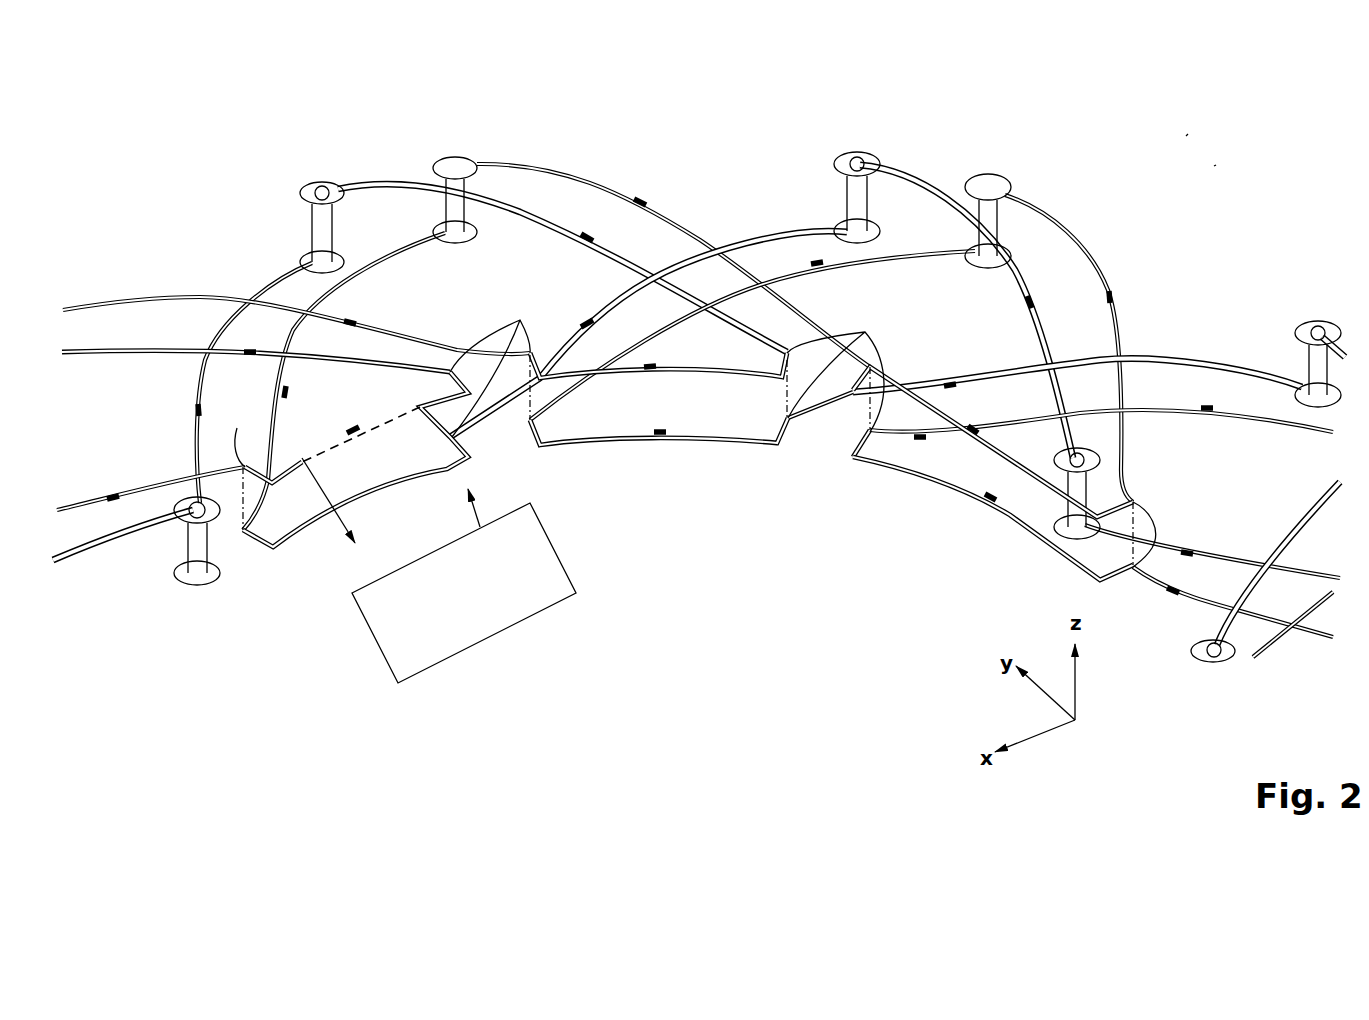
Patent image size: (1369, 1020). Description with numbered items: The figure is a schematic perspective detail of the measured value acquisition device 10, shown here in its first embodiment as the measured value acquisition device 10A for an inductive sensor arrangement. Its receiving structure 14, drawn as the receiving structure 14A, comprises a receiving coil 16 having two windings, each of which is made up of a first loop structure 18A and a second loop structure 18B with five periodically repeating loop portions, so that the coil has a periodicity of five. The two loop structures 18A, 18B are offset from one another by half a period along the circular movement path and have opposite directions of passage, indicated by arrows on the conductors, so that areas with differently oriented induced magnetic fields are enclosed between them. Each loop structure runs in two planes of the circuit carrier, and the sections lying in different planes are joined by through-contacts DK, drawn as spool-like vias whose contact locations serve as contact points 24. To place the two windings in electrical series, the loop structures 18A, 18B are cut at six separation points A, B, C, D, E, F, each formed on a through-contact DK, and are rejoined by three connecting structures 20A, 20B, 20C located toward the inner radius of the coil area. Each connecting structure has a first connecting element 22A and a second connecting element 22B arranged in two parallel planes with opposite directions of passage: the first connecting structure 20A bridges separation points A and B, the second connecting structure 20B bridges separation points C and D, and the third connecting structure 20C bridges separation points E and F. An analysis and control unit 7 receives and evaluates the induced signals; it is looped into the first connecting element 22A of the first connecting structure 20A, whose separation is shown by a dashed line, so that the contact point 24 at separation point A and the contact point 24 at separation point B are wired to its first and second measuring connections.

The measured value acquisition device 10 is at (1188, 136).
The measured value acquisition device (first embodiment) 10A is at (1187, 135).
The receiving structure 14 is at (297, 131).
The receiving structure (first embodiment) 14A is at (461, 345).
The receiving coil 16 is at (1215, 166).
The first loop structure 18A is at (384, 184).
The second loop structure 18B is at (770, 229).
The through-contact DK is at (857, 163).
The first connecting structure 20A is at (312, 560).
The second connecting structure 20B is at (675, 464).
The third connecting structure 20C is at (973, 539).
The first connecting element 22A is at (340, 432).
The second connecting element 22B is at (413, 364).
The contact point 24 is at (1163, 527).
The analysis and control unit 7 is at (470, 607).
The first separation point A is at (238, 542).
The second separation point B is at (412, 366).
The third separation point C is at (523, 440).
The fourth separation point D is at (797, 439).
The fifth separation point E is at (866, 473).
The sixth separation point F is at (1138, 593).